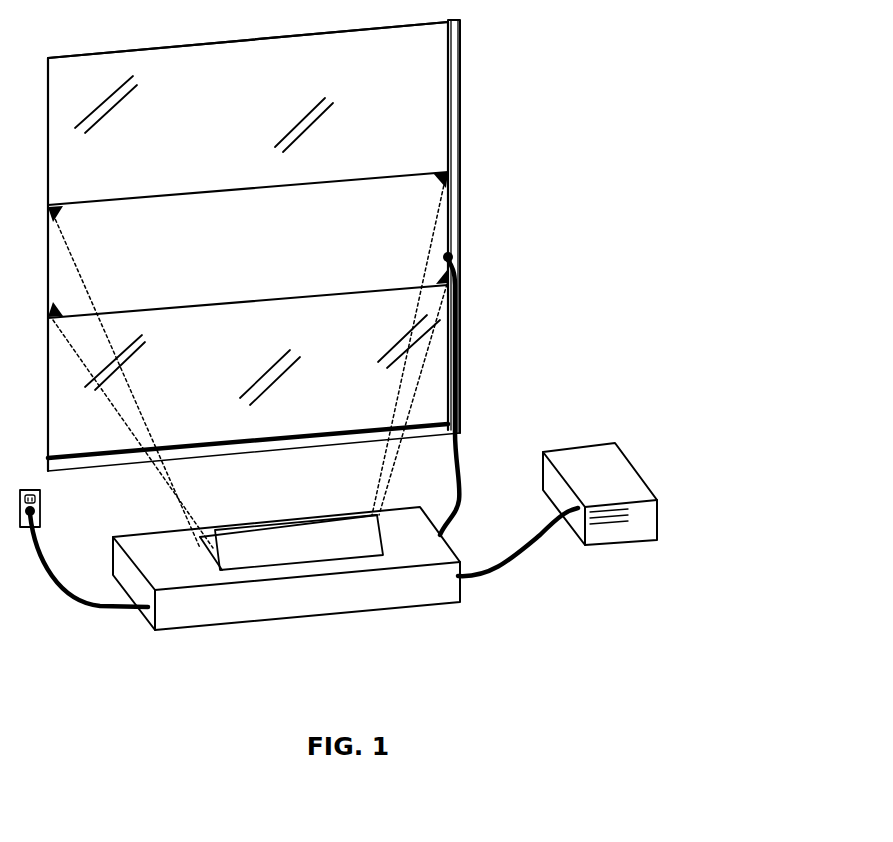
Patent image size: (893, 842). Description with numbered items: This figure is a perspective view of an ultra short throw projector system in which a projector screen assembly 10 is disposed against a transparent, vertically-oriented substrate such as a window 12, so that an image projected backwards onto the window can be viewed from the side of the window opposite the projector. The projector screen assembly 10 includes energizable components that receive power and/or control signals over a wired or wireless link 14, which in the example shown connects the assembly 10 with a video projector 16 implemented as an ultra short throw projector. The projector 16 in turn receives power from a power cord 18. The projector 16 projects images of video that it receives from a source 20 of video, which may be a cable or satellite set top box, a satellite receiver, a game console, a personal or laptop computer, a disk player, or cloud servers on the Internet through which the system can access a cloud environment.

The projector screen assembly 10 is at (450, 229).
The window 12 is at (428, 113).
The wired or wireless link 14 is at (461, 468).
The video projector 16 is at (393, 612).
The power cord 18 is at (80, 606).
The source of video 20 is at (656, 527).